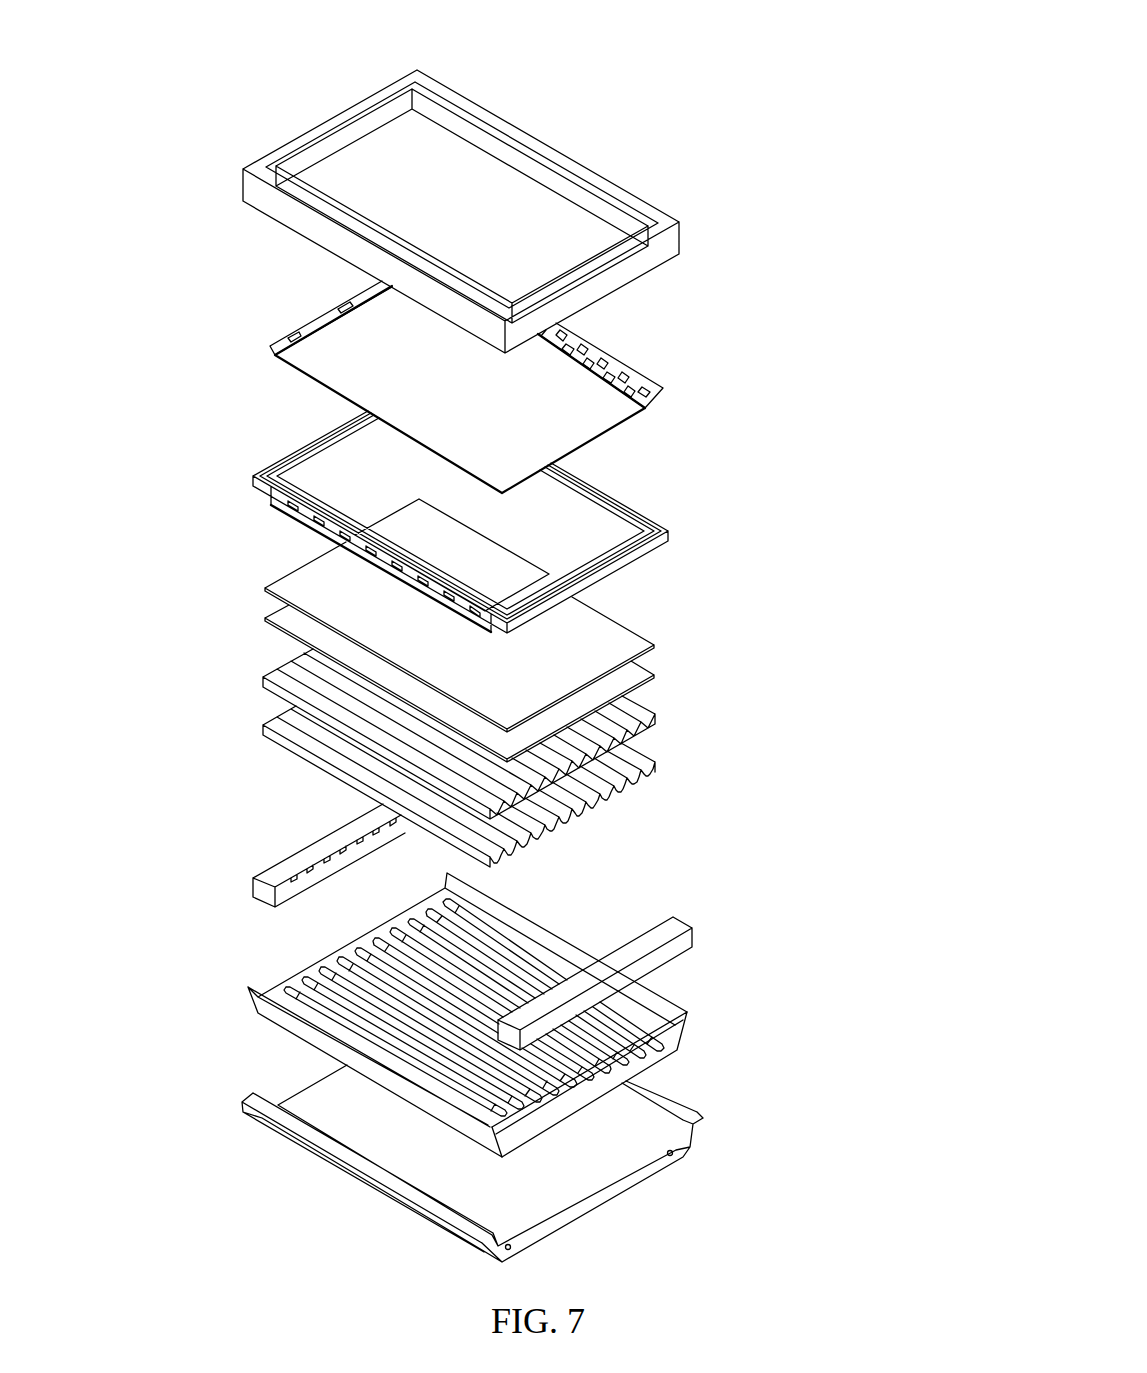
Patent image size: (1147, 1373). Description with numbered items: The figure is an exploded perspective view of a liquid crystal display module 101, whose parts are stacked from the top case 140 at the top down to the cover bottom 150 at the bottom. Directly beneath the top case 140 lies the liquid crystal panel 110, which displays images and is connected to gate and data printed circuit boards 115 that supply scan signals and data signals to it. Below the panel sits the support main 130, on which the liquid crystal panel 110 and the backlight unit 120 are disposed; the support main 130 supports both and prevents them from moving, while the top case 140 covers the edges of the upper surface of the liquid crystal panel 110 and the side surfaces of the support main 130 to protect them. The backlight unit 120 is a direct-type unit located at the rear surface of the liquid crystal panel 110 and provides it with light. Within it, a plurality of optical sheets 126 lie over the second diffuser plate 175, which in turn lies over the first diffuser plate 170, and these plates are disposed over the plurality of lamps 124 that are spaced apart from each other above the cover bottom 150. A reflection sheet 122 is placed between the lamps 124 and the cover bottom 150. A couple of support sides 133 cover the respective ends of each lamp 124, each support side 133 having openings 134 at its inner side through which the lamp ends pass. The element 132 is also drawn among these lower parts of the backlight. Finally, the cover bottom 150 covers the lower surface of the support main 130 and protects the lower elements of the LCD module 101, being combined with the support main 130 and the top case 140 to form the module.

The LCD module 101 is at (673, 97).
The top case 140 is at (679, 240).
The liquid crystal panel 110 is at (598, 388).
The gate and data printed circuit boards 115 is at (667, 377).
The support main 130 is at (669, 529).
The backlight unit 120 is at (776, 1042).
The optical sheets 126 is at (672, 641).
The second diffuser plate 175 is at (656, 714).
The first diffuser plate 170 is at (656, 764).
The openings 134 is at (310, 888).
The lamps 124 is at (507, 947).
The reflection sheet 122 is at (657, 1000).
The support sides 133 is at (677, 924).
The side mold 132 is at (678, 1055).
The cover bottom 150 is at (688, 1103).